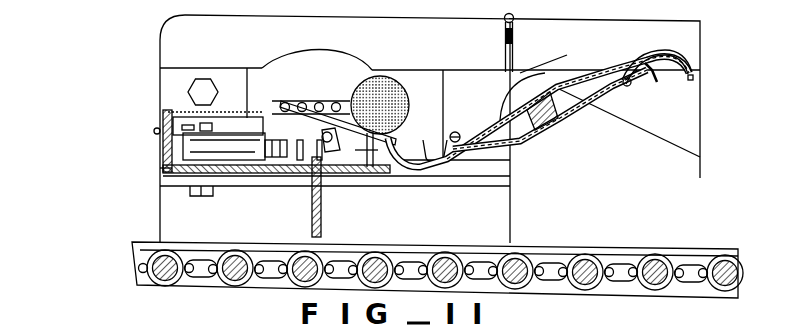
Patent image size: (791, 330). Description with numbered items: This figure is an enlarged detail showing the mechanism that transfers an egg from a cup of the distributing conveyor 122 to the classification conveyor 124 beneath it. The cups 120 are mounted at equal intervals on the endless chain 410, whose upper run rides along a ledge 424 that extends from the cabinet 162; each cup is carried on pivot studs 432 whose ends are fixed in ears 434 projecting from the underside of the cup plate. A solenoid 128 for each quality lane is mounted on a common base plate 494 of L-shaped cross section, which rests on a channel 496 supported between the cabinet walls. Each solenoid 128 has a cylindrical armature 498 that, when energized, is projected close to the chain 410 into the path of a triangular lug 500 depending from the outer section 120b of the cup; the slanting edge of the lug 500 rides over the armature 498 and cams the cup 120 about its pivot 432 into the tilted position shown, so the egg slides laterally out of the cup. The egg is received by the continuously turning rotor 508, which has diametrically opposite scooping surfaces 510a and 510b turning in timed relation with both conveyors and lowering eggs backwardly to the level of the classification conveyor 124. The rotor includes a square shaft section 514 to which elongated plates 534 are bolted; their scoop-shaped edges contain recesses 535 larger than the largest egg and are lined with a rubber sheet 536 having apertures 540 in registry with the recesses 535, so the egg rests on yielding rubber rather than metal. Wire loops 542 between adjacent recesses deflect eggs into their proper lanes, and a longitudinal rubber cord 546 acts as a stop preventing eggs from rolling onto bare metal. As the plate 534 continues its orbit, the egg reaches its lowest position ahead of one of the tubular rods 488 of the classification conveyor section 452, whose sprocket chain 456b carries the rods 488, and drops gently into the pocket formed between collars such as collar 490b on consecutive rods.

The cabinet 162 is at (163, 57).
The base plate 494 is at (162, 112).
The solenoid 128 is at (200, 152).
The channel 496 is at (167, 169).
The cylindrical armature 498 is at (275, 135).
The outer section 120b is at (288, 102).
The cups 120 is at (320, 103).
The ears 434 is at (336, 130).
The lug 500 is at (273, 173).
The distributing conveyor 122 is at (288, 172).
The ledge 424 is at (310, 186).
The endless chain 410 is at (337, 178).
The pivot studs 432 is at (365, 160).
The wire loops 542 is at (437, 129).
The rubber cord 546 is at (455, 132).
The scooping surface 510a is at (447, 161).
The rubber sheet 536 is at (506, 157).
The shaft section 514 is at (547, 118).
The rotor 508 is at (580, 112).
The plates 534 is at (613, 73).
The recesses 535 is at (675, 52).
The apertures 540 is at (676, 58).
The scooping surface 510b is at (647, 73).
The classification conveyor 124 is at (128, 246).
The section 452 is at (130, 275).
The tubular rods 488 is at (655, 290).
The collar 490b is at (582, 256).
The sprocket chain 456b is at (723, 293).